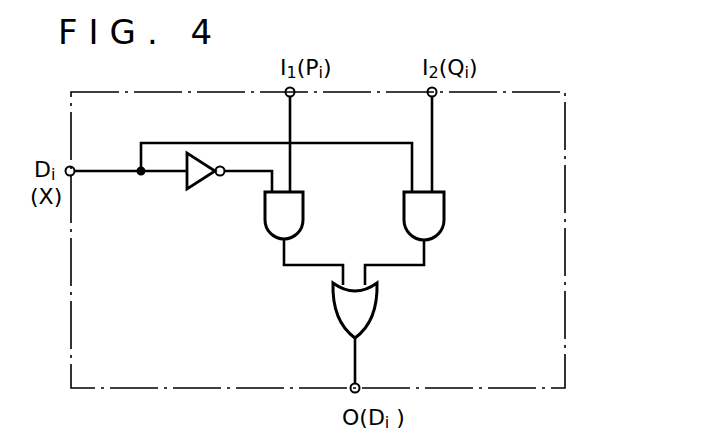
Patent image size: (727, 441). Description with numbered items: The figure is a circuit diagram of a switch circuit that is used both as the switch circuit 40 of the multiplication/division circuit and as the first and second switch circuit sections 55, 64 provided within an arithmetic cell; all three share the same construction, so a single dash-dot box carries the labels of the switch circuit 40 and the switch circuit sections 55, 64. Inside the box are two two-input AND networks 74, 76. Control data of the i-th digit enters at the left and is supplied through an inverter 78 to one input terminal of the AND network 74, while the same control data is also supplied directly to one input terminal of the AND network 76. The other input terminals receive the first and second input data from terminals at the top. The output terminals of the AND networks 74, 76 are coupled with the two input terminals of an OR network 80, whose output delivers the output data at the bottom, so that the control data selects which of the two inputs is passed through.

The AND network 74 is at (305, 218).
The AND network 76 is at (446, 210).
The inverter 78 is at (208, 177).
The OR network 80 is at (372, 309).
The first switch circuit section 55 is at (358, 240).
The second switch circuit section 64 is at (358, 240).
The switch circuit 40 is at (567, 218).